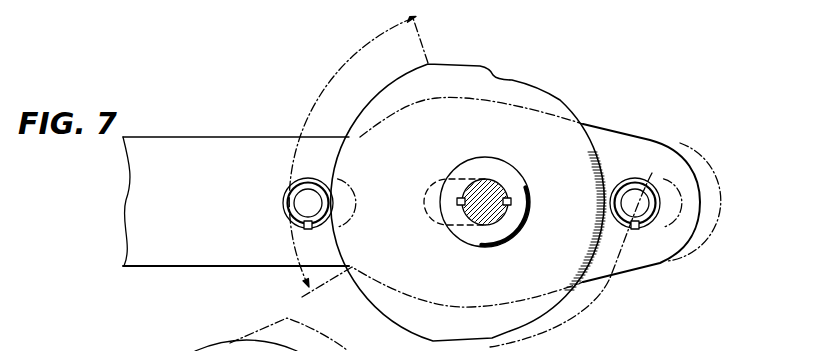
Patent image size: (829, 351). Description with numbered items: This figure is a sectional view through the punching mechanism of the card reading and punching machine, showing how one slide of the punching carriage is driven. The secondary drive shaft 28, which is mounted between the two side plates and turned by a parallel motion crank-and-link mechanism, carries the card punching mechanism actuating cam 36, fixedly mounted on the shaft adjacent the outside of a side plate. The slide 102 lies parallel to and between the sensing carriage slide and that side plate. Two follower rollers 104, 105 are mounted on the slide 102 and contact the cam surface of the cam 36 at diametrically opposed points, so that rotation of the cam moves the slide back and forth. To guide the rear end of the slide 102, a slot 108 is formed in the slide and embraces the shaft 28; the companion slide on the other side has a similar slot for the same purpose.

The secondary drive shaft 28 is at (494, 187).
The card punching mechanism actuating cam 36 is at (500, 78).
The slide 102 is at (231, 113).
The follower roller 104 is at (292, 210).
The follower roller 105 is at (636, 178).
The slot 108 is at (428, 188).